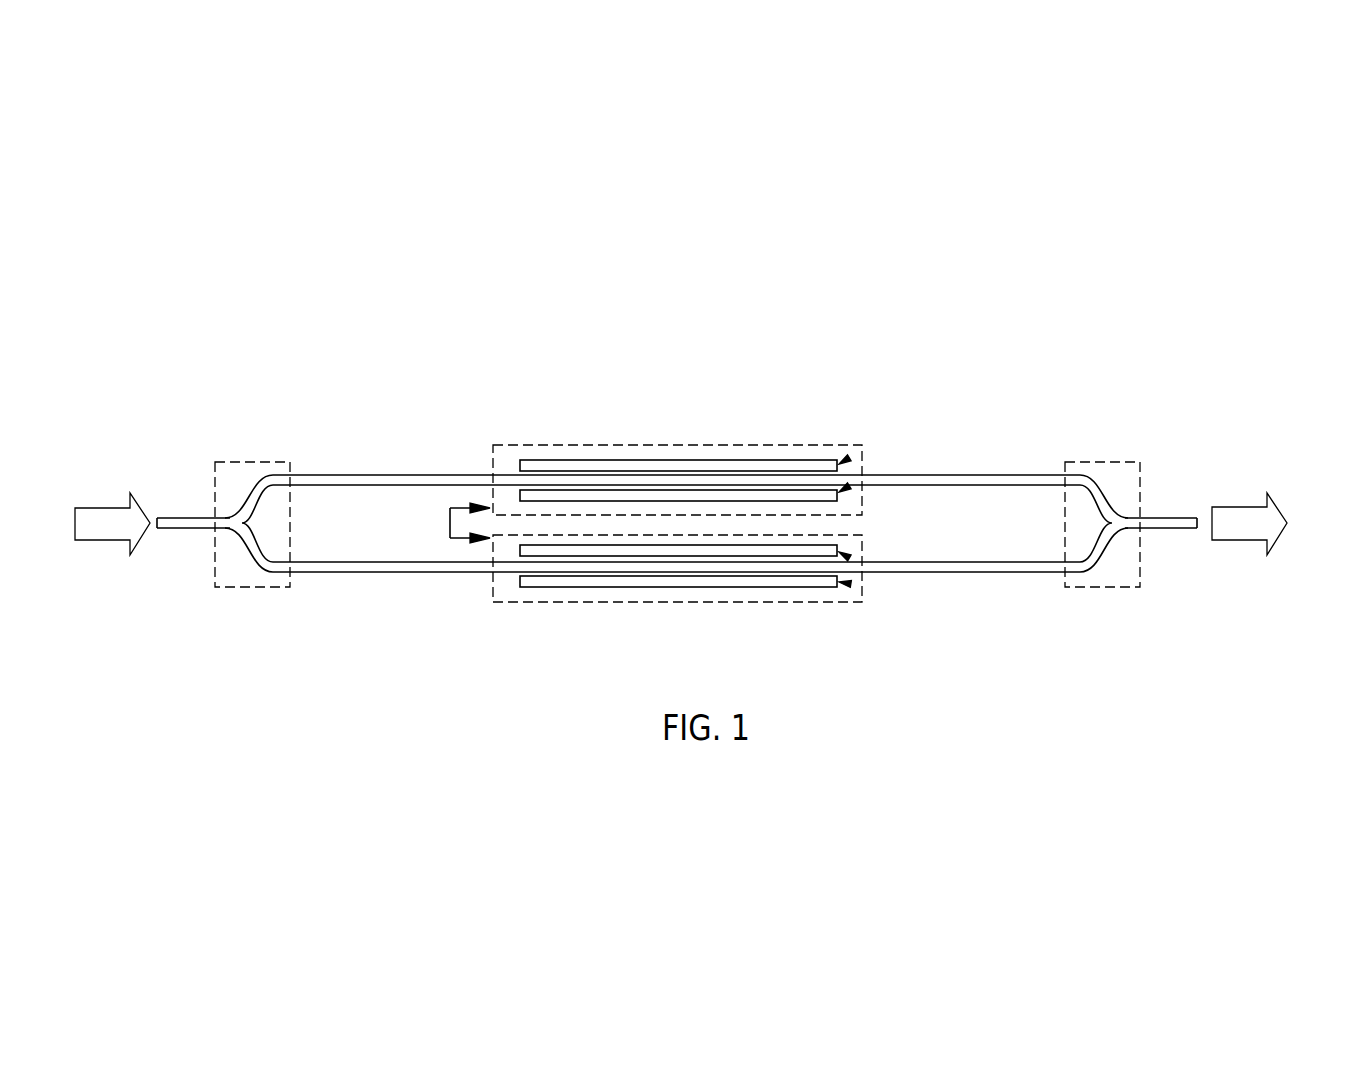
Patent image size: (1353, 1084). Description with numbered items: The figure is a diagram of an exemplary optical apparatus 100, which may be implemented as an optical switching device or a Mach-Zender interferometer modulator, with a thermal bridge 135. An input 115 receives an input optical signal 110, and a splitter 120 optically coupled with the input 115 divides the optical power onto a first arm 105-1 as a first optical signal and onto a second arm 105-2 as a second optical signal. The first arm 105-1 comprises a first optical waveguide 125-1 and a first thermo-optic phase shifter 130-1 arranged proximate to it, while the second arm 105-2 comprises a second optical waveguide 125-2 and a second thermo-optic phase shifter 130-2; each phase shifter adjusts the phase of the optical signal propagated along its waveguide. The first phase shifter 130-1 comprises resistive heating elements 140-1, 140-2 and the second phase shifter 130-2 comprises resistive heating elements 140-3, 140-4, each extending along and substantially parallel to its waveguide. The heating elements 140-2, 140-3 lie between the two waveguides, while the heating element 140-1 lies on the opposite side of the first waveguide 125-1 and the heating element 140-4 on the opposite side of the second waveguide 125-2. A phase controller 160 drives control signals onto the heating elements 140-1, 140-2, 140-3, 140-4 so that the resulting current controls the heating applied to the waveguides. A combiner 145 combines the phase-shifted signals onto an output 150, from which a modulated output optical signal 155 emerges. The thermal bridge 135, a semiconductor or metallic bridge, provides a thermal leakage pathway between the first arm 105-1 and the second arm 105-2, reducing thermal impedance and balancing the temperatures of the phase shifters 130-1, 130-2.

The optical apparatus 100 is at (1066, 342).
The first arm 105-1 is at (676, 445).
The second arm 105-2 is at (676, 613).
The input optical signal 110 is at (120, 540).
The input 115 is at (200, 530).
The splitter 120 is at (237, 588).
The first optical waveguide 125-1 is at (415, 487).
The second optical waveguide 125-2 is at (420, 562).
The first thermo-optic phase shifter 130-1 is at (740, 443).
The second thermo-optic phase shifter 130-2 is at (740, 594).
The thermal bridge 135 is at (450, 508).
The resistive heating element 140-1 is at (774, 460).
The resistive heating element 140-2 is at (840, 497).
The resistive heating element 140-3 is at (840, 549).
The resistive heating element 140-4 is at (812, 588).
The combiner 145 is at (1090, 588).
The output 150 is at (1160, 518).
The output optical signal 155 is at (1235, 542).
The phase controller 160 is at (849, 486).